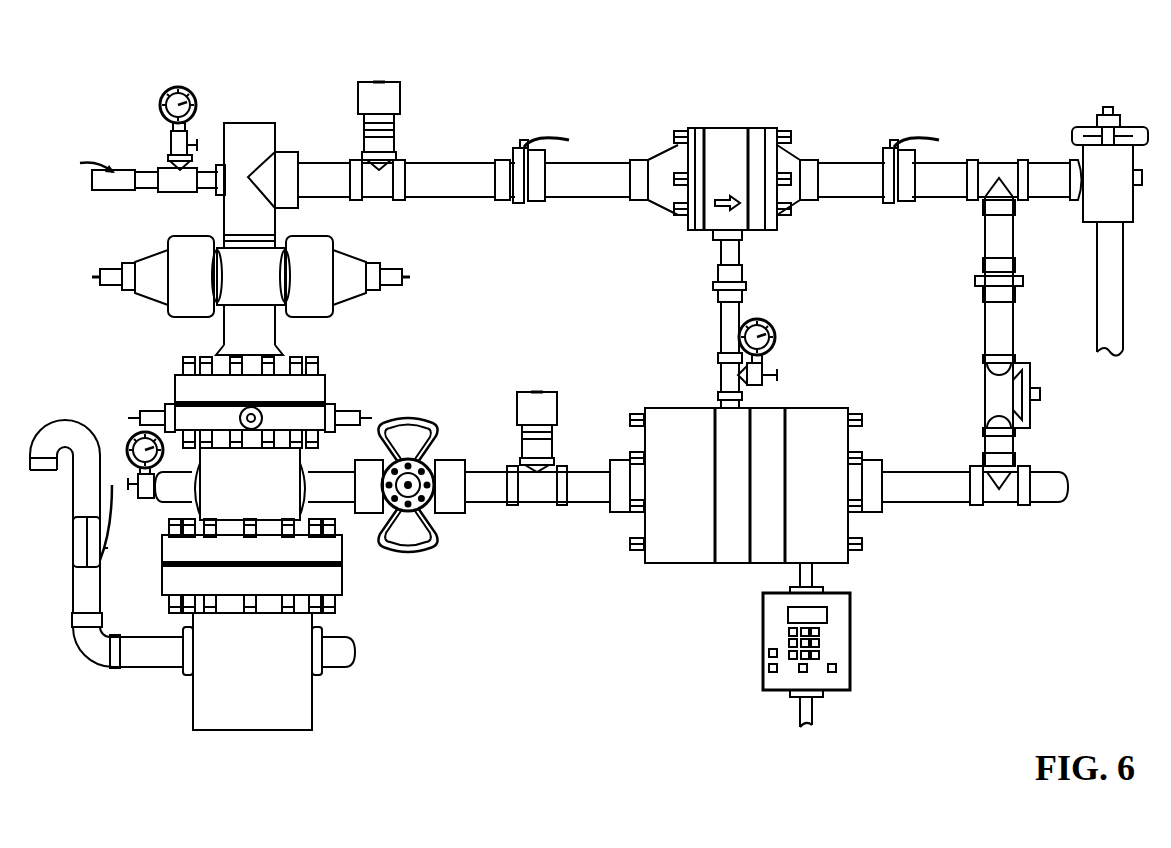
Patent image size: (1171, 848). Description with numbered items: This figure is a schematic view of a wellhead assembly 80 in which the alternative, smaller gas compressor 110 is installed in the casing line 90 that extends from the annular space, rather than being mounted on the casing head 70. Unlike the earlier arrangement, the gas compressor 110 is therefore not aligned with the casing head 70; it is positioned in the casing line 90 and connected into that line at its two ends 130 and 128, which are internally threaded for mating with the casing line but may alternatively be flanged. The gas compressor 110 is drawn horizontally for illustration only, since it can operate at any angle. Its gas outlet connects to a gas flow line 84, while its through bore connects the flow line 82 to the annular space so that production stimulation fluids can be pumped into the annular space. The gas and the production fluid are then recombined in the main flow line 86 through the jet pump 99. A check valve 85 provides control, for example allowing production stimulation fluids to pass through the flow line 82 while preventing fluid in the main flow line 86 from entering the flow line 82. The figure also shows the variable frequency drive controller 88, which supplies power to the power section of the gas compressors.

The frac fluid metering and control system 80 is at (92, 92).
The casing head 70 is at (262, 700).
The jet pump 99 is at (727, 140).
The gas flow line 84 is at (723, 330).
The main flow line 86 is at (1112, 292).
The check valve 85 is at (1020, 382).
The casing line 90 is at (486, 490).
The bottom end 130 is at (623, 494).
The gas compressor 110 is at (687, 518).
The top end 128 is at (872, 496).
The flow line 82 is at (943, 490).
The variable frequency drive controller 88 is at (778, 636).